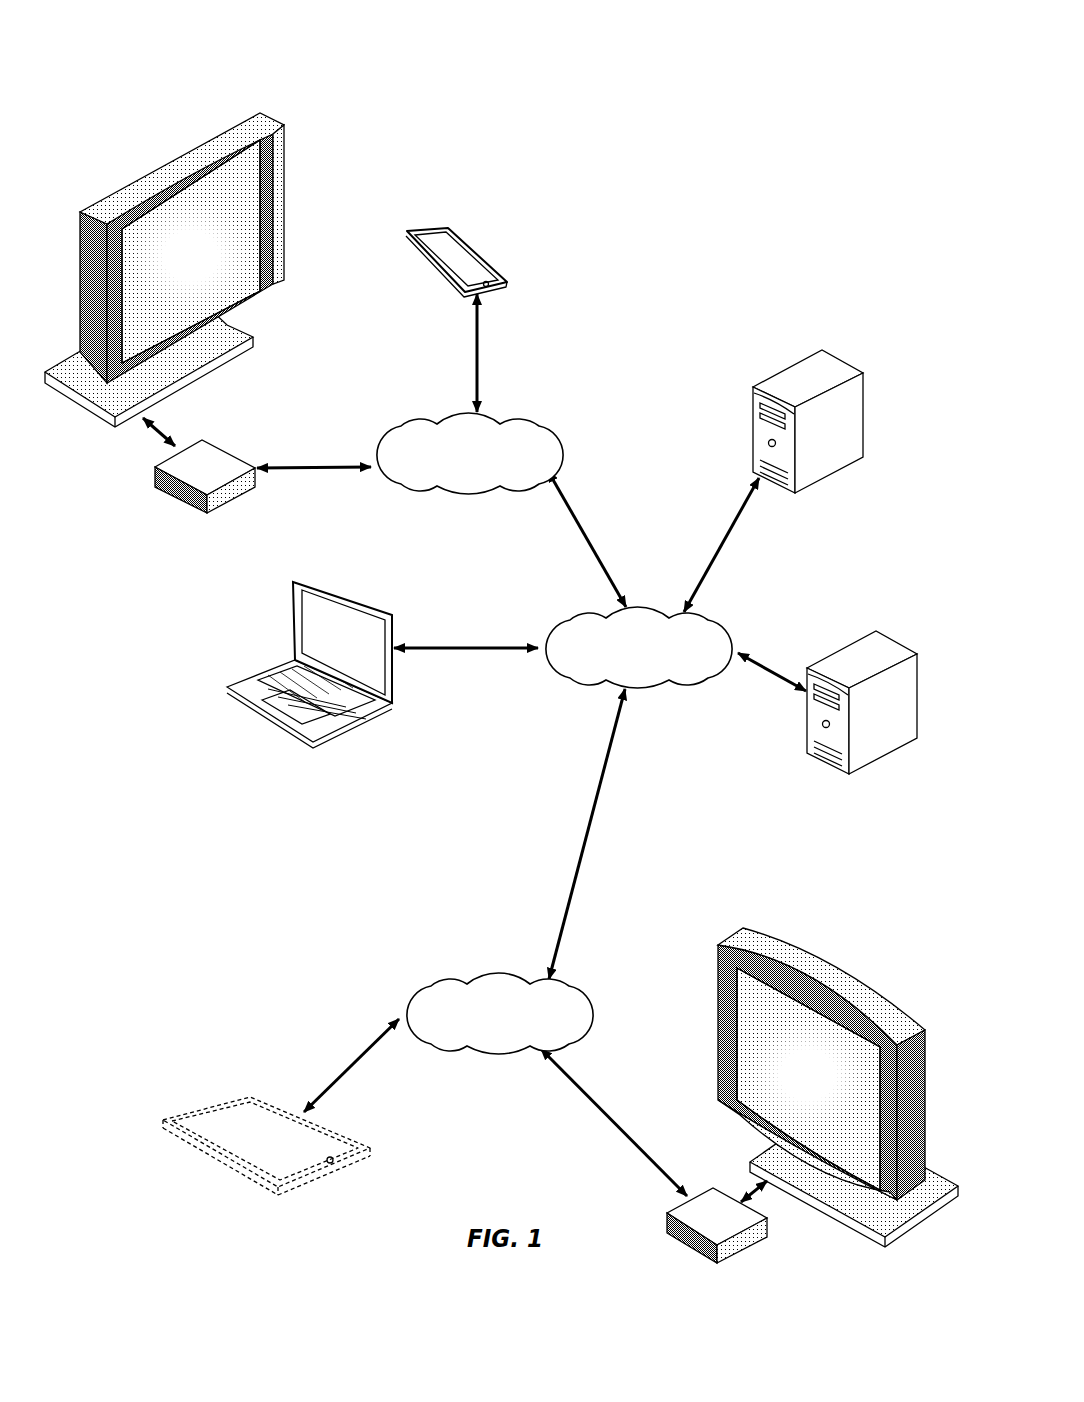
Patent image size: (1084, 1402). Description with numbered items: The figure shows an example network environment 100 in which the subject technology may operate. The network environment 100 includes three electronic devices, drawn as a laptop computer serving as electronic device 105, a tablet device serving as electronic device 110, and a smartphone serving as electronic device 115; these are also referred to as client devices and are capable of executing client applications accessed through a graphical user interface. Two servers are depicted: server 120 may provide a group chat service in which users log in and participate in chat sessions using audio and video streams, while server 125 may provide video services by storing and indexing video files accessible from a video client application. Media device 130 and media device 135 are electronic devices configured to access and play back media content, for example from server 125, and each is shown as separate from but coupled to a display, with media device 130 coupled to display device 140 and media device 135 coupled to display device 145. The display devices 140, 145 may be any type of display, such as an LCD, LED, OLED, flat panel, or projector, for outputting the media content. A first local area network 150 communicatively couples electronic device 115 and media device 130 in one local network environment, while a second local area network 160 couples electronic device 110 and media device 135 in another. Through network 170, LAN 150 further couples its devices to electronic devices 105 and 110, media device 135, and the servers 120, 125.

The network environment 100 is at (66, 76).
The electronic device 105 is at (290, 730).
The electronic device 110 is at (248, 1097).
The electronic device 115 is at (465, 240).
The server 120 is at (805, 358).
The server 125 is at (858, 637).
The media device 130 is at (231, 503).
The media device 135 is at (665, 1233).
The display device 140 is at (175, 137).
The display device 145 is at (850, 980).
The local area network 150 is at (390, 427).
The local area network 160 is at (420, 990).
The network 170 is at (557, 627).